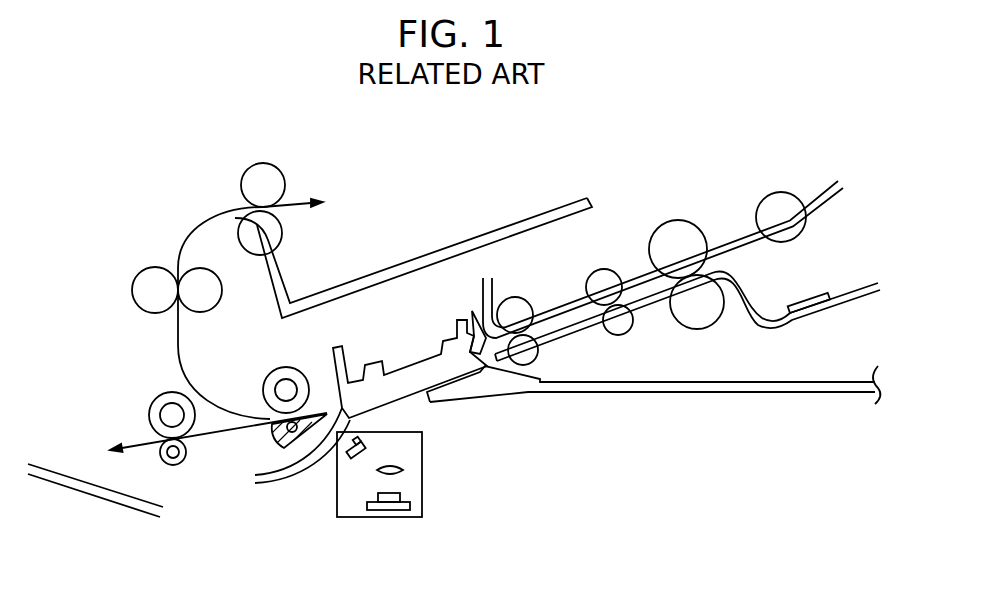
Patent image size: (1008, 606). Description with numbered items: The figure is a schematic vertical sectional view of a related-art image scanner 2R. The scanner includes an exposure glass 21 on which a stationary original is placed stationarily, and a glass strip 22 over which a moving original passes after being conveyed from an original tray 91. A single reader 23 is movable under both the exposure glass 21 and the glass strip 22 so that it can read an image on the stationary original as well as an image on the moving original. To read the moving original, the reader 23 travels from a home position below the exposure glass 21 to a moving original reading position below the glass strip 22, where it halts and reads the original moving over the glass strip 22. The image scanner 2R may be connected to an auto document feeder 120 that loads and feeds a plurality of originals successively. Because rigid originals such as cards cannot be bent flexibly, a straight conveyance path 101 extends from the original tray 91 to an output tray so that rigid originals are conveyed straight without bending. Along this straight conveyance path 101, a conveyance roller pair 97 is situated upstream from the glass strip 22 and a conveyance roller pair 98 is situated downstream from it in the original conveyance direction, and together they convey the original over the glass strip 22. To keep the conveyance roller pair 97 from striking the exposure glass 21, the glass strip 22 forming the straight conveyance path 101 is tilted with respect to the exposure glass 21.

The related-art image scanner 2R is at (653, 148).
The auto document feeder (ADF) 120 is at (723, 195).
The conveyance roller pair 97 is at (519, 330).
The original tray 91 is at (840, 296).
The glass strip 22 is at (408, 394).
The straight conveyance path 101 is at (480, 353).
The exposure glass 21 is at (632, 396).
The conveyance roller pair 98 is at (262, 410).
The reader 23 is at (329, 501).